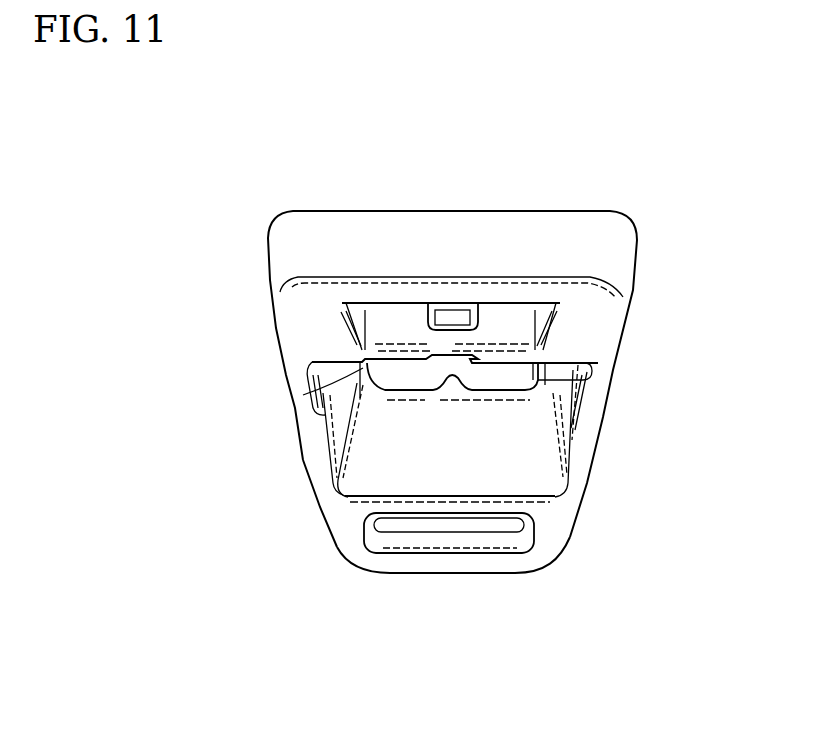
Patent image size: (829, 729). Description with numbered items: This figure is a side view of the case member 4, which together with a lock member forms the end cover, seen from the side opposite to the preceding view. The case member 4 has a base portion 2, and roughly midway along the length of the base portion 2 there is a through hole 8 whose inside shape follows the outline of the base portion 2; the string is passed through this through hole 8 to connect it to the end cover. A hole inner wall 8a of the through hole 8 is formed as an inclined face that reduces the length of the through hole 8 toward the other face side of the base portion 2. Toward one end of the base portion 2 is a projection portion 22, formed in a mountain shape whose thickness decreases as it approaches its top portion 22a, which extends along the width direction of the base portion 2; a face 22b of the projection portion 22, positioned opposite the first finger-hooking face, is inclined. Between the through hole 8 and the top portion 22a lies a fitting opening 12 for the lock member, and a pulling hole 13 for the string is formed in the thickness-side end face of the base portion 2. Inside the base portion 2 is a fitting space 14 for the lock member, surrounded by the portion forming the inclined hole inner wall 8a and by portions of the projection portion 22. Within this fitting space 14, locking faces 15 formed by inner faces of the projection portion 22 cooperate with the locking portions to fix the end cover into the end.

The base portion 2 is at (625, 260).
The case member 4 is at (503, 152).
The through hole 8 is at (404, 312).
The hole inner wall 8a is at (500, 315).
The fitting opening 12 is at (512, 457).
The pulling hole 13 is at (510, 382).
The fitting space 14 is at (403, 450).
The locking face 15 is at (312, 386).
The projection portion 22 is at (417, 573).
The top portion 22a is at (487, 573).
The face 22b is at (315, 443).